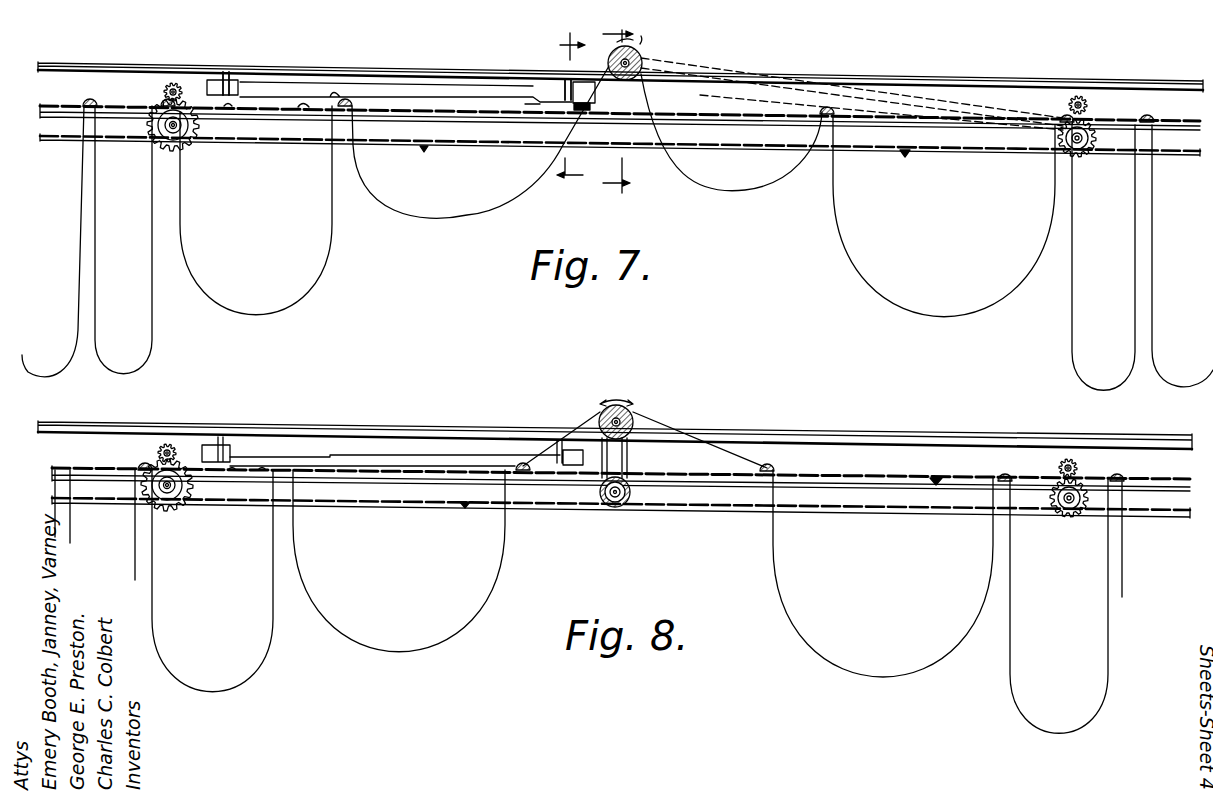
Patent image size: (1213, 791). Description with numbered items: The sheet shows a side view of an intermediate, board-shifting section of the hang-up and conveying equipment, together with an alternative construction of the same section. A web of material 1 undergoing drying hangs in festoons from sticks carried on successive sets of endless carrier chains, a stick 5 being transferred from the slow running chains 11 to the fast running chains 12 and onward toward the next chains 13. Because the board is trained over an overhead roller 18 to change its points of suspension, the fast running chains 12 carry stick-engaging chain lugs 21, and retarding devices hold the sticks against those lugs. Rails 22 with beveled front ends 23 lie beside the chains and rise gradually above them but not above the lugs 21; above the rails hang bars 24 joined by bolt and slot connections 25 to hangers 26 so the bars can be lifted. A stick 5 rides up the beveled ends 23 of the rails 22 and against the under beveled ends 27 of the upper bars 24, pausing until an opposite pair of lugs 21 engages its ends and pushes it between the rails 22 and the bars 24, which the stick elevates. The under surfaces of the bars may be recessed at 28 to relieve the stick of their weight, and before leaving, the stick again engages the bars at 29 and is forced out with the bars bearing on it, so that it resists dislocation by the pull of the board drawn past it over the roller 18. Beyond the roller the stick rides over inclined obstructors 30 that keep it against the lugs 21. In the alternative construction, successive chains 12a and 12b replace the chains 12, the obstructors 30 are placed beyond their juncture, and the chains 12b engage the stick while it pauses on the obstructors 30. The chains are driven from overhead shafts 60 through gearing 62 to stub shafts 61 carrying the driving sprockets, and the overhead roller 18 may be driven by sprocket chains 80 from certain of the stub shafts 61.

In FIG. 7, the web of material 1 is at (840, 229).
In FIG. 8, the web of material 1 is at (135, 530).
In FIG. 7, the stick 5 is at (84, 100).
In FIG. 8, the stick 5 is at (777, 468).
In FIG. 7, the carrier chains 11 is at (120, 104).
In FIG. 8, the carrier chains 11 is at (128, 470).
In FIG. 7, the carrier chains 12 is at (346, 110).
In FIG. 8, the carrier chains 12a is at (196, 465).
In FIG. 8, the carrier chains 12b is at (935, 480).
In FIG. 7, the carrier chains 13 is at (1185, 125).
In FIG. 8, the carrier chains 13 is at (1158, 484).
In FIG. 7, the overhead roller 18 is at (642, 67).
In FIG. 8, the overhead roller 18 is at (638, 420).
In FIG. 7, the chain lugs 21 is at (425, 151).
In FIG. 8, the chain lugs 21 is at (1000, 480).
In FIG. 7, the rails 22 is at (300, 108).
In FIG. 8, the rails 22 is at (262, 475).
In FIG. 7, the beveled front ends 23 is at (228, 110).
In FIG. 8, the beveled front ends 23 is at (232, 475).
In FIG. 7, the hanging bars 24 is at (407, 87).
In FIG. 8, the hanging bars 24 is at (420, 455).
In FIG. 7, the bolt and slot connections 25 is at (232, 92).
In FIG. 8, the bolt and slot connections 25 is at (228, 455).
In FIG. 7, the hangers 26 is at (228, 82).
In FIG. 8, the hangers 26 is at (225, 440).
In FIG. 7, the under beveled ends 27 is at (207, 84).
In FIG. 7, the recess 28 is at (471, 106).
In FIG. 8, the recess 28 is at (372, 472).
In FIG. 7, the engagement point 29 is at (530, 106).
In FIG. 7, the inclined obstructors 30 is at (658, 112).
In FIG. 8, the inclined obstructors 30 is at (697, 461).
In FIG. 7, the overhead shafts 60 is at (172, 86).
In FIG. 8, the overhead shafts 60 is at (167, 445).
In FIG. 7, the stub shafts 61 is at (168, 150).
In FIG. 8, the stub shafts 61 is at (170, 503).
In FIG. 7, the gearing 62 is at (163, 101).
In FIG. 8, the gearing 62 is at (1062, 466).
In FIG. 7, the sprocket chains 80 is at (925, 103).
In FIG. 8, the sprocket chains 80 is at (630, 452).